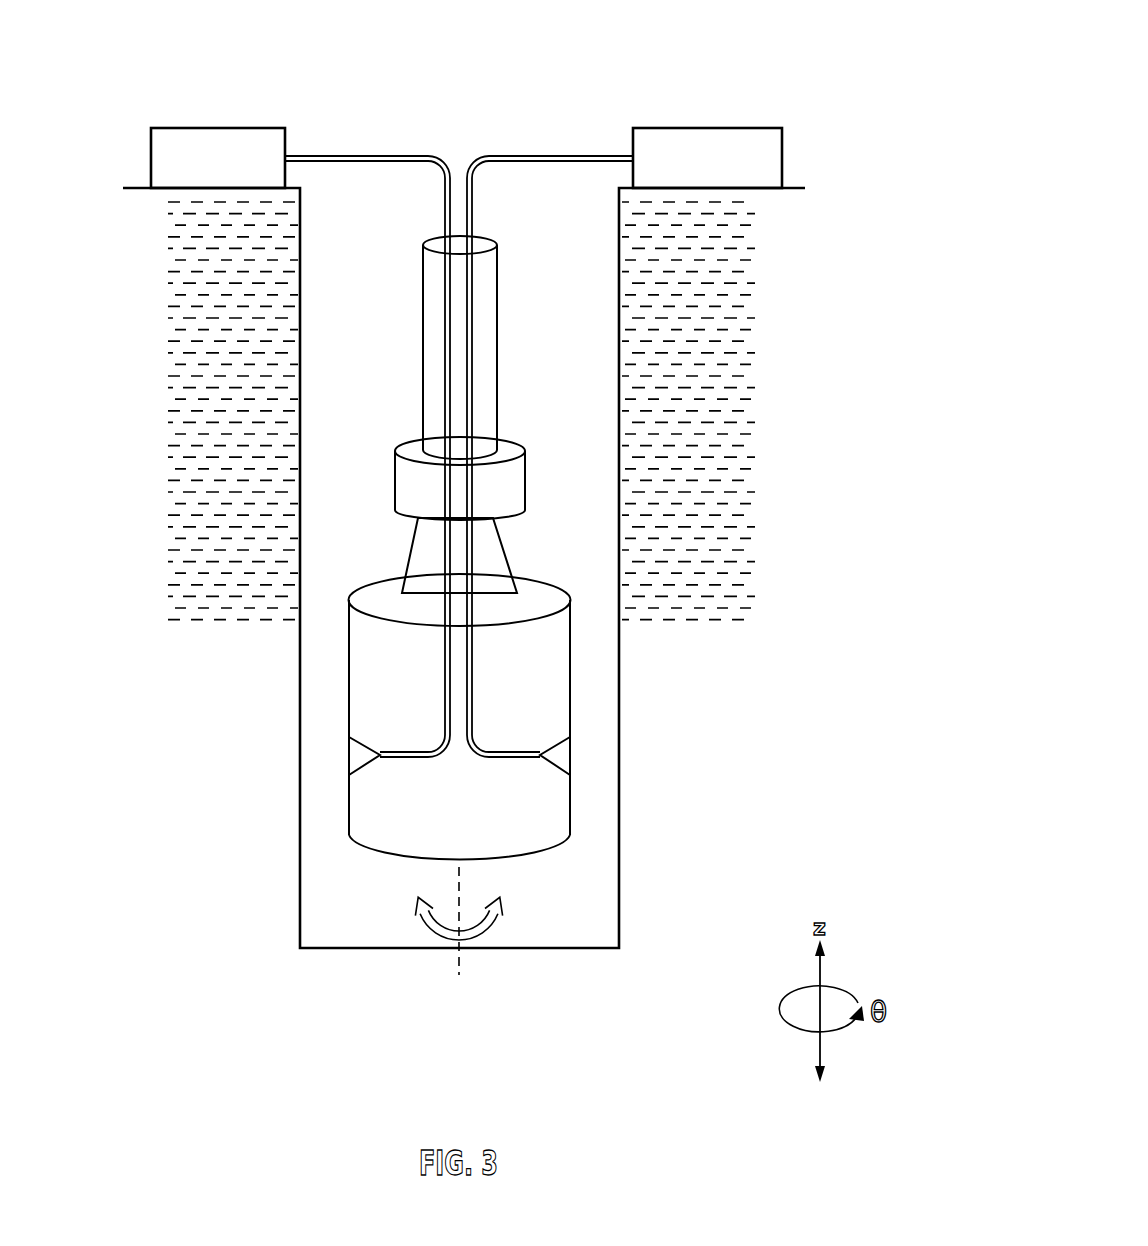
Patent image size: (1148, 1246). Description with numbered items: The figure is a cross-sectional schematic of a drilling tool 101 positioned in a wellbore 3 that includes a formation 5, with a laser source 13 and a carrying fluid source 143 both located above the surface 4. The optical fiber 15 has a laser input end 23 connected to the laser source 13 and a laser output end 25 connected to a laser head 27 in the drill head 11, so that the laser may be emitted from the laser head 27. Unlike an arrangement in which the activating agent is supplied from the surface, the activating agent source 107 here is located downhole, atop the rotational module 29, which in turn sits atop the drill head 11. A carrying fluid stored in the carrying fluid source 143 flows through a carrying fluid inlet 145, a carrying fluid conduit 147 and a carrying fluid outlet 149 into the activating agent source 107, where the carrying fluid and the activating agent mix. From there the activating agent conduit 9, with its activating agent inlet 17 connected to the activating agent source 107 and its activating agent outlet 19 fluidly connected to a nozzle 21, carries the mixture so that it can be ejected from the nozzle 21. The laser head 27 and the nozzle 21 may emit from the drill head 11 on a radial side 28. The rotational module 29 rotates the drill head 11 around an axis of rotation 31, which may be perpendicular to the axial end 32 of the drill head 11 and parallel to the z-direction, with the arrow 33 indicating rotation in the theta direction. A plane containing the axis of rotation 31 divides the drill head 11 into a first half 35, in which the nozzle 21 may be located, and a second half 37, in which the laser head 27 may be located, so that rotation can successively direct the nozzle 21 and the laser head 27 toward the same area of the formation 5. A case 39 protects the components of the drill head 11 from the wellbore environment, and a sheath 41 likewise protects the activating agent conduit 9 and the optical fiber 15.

The drilling tool 101 is at (787, 41).
The carrying fluid source 143 is at (189, 127).
The carrying fluid inlet 145 is at (294, 151).
The laser input end 23 is at (623, 151).
The laser source 13 is at (746, 127).
The surface 4 is at (200, 247).
The wellbore 3 is at (298, 375).
The formation 5 is at (210, 867).
The activating agent inlet 17 is at (442, 518).
The sheath 41 is at (423, 298).
The optical fiber 15 is at (475, 338).
The carrying fluid conduit 147 is at (445, 362).
The carrying fluid outlet 149 is at (444, 447).
The activating agent source 107 is at (395, 482).
The rotational module 29 is at (405, 576).
The case 39 is at (540, 577).
The drill head 11 is at (349, 637).
The activating agent conduit 9 is at (368, 671).
The first half 35 is at (440, 633).
The radial side 28 is at (575, 634).
The second half 37 is at (548, 671).
The nozzle 21 is at (362, 757).
The laser head 27 is at (558, 757).
The activating agent outlet 19 is at (388, 765).
The laser output end 25 is at (532, 765).
The axial end 32 is at (387, 865).
The axis of rotation 31 is at (462, 875).
The arrow 33 is at (493, 930).